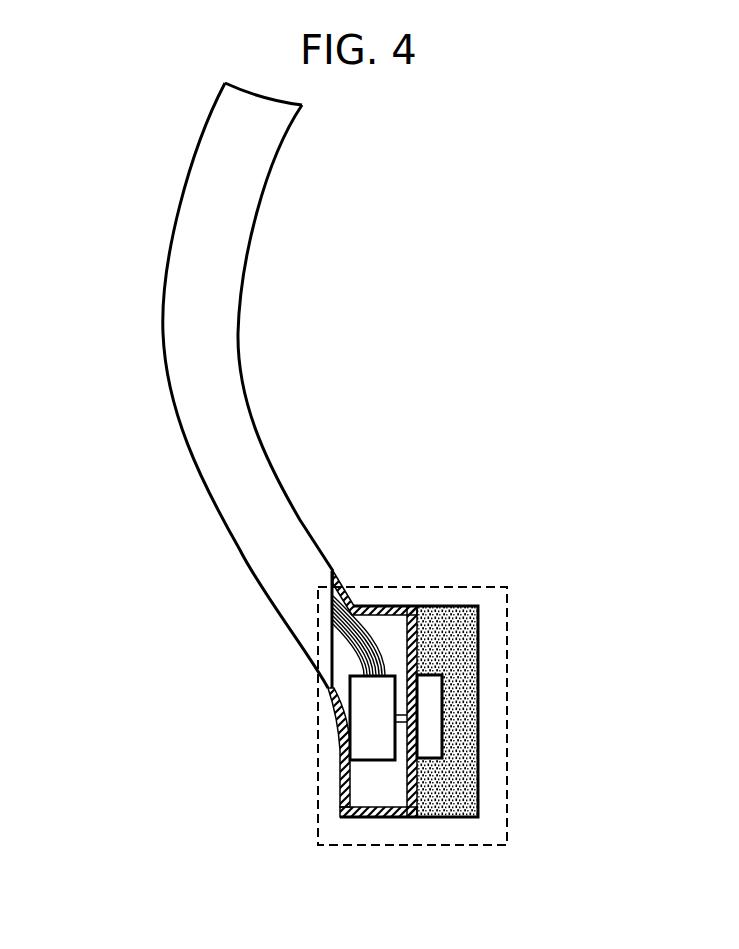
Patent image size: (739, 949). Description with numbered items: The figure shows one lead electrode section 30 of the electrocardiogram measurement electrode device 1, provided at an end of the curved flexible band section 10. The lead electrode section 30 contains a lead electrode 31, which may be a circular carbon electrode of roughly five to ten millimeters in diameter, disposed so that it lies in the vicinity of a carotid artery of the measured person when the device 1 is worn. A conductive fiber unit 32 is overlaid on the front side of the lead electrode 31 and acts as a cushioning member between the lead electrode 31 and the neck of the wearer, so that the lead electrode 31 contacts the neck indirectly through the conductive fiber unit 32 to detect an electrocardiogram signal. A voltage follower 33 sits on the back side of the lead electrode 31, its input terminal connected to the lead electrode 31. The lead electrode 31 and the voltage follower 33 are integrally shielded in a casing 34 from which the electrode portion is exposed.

The electrocardiogram measurement electrode device 1 is at (152, 125).
The flexible band section 10 is at (175, 217).
The lead electrode section 30 is at (415, 585).
The lead electrode 31 is at (435, 692).
The conductive fiber unit 32 is at (470, 765).
The voltage follower 33 is at (358, 736).
The casing 34 is at (383, 817).